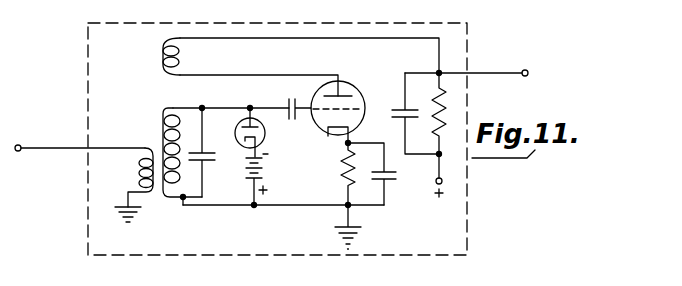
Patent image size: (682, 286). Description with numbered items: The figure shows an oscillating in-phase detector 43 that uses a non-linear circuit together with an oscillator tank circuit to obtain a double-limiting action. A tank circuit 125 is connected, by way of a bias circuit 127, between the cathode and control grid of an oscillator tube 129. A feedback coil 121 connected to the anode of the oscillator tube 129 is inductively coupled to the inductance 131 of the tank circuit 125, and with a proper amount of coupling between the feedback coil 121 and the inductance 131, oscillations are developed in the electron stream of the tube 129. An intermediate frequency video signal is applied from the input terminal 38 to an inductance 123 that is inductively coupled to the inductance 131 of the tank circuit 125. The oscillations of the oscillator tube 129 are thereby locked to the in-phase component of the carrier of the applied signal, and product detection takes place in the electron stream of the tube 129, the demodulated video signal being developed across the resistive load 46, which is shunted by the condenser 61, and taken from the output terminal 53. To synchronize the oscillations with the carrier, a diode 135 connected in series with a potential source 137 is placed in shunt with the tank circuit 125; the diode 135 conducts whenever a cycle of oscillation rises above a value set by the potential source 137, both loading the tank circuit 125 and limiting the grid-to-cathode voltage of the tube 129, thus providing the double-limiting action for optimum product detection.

The input terminal 38 is at (20, 144).
The oscillating in-phase detector 43 is at (430, 24).
The anode load resistor 46 is at (430, 126).
The output terminal 53 is at (528, 71).
The condenser 61 is at (403, 108).
The feedback coil 121 is at (178, 56).
The inductance 123 is at (144, 181).
The tank circuit 125 is at (185, 110).
The bias circuit 127 is at (368, 188).
The oscillator tube 129 is at (350, 98).
The inductance 131 is at (164, 138).
The diode 135 is at (261, 140).
The potential source 137 is at (251, 169).